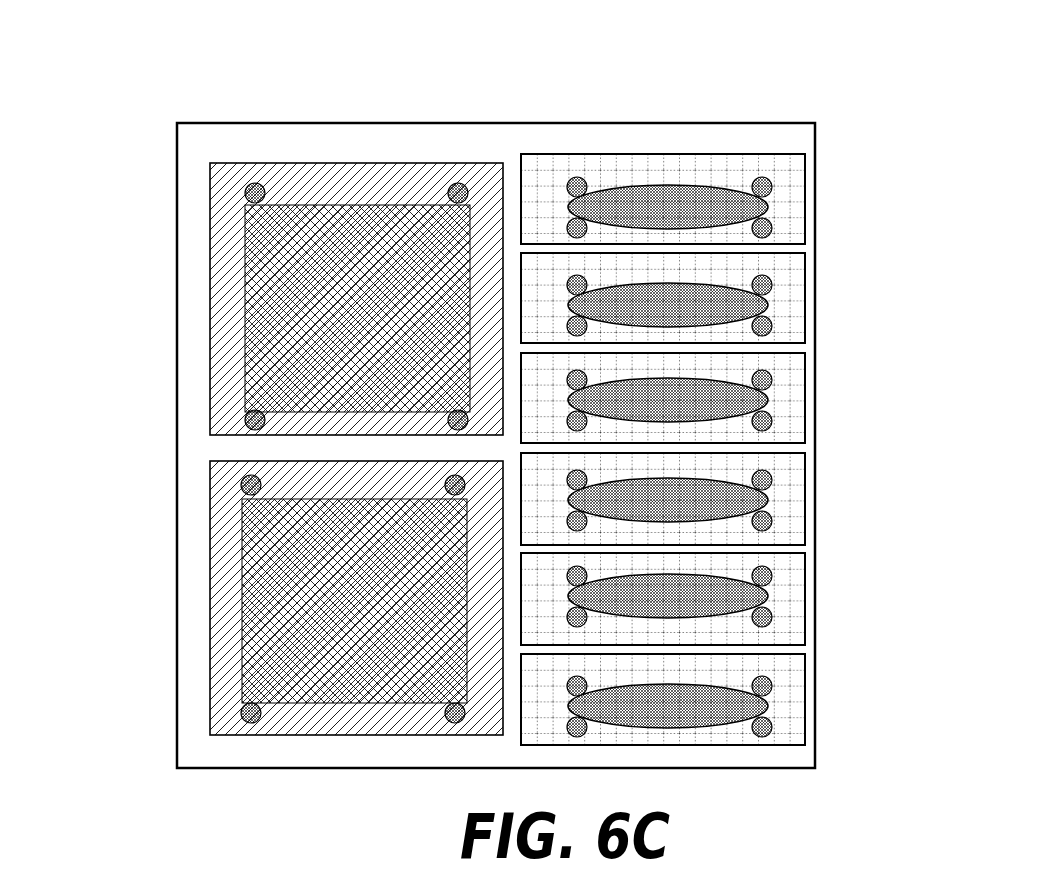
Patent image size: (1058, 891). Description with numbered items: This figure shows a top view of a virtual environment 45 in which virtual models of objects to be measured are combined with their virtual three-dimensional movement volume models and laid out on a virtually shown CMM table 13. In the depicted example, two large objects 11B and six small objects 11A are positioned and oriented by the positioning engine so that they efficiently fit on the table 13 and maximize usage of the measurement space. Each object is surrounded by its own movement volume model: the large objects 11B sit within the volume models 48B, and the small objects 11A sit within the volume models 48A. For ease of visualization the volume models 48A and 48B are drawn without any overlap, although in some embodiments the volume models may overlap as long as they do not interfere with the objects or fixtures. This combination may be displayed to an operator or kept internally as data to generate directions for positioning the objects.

The virtual environment 45 is at (134, 228).
The CMM table 13 is at (228, 161).
The volume model 48B is at (348, 172).
The large object 11B is at (355, 453).
The volume model 48A is at (788, 199).
The small object 11A is at (669, 457).